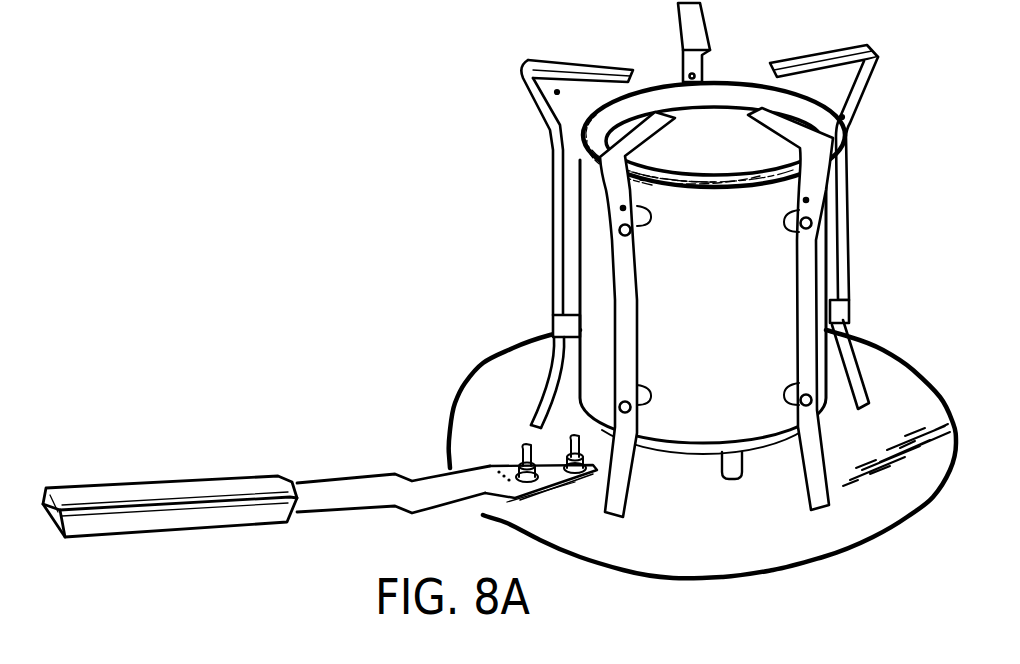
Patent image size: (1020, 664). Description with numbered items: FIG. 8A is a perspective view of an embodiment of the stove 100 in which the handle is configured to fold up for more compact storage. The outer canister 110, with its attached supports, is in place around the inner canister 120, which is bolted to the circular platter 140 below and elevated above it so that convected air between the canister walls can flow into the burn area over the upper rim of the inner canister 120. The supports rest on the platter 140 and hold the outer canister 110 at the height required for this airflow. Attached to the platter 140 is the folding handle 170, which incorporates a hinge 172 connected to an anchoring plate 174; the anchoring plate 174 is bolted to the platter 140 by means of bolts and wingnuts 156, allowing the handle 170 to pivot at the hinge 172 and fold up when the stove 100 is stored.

The stove 100 is at (333, 170).
The outer canister 110 is at (683, 447).
The inner canister 120 is at (760, 450).
The circular platter 140 is at (513, 353).
The bolts and wingnuts 156 is at (500, 500).
The folding handle 170 is at (307, 467).
The hinge 172 is at (512, 465).
The anchoring plate 174 is at (556, 458).